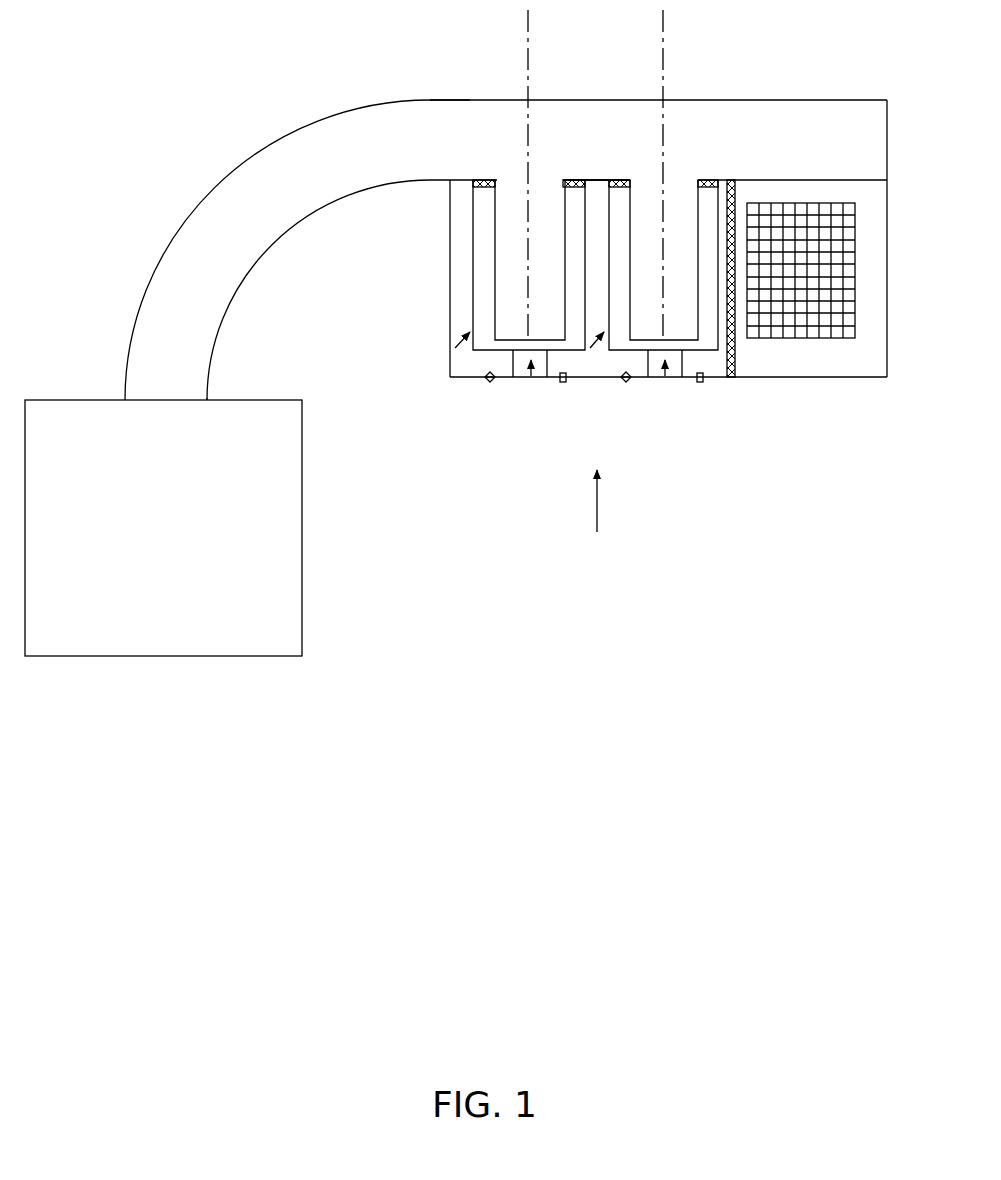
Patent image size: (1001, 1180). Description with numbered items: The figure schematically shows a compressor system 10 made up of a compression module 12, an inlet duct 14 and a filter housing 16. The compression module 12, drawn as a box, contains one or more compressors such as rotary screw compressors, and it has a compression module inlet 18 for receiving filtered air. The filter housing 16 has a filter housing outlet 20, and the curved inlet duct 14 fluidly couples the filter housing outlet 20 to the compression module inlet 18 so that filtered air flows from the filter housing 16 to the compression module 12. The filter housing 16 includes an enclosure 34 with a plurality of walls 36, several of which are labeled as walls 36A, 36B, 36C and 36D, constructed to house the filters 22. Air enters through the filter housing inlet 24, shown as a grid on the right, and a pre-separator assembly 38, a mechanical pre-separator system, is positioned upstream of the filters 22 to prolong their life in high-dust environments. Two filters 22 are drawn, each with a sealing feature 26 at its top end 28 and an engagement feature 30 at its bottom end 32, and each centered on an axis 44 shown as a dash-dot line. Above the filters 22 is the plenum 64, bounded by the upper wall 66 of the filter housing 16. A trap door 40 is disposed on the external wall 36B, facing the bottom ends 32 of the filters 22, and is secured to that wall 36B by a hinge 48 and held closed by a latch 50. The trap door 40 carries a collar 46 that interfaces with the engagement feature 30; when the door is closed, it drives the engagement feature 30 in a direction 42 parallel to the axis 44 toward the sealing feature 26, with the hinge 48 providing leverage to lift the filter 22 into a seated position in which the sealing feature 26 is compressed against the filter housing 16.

The compressor system 10 is at (165, 42).
The compression module 12 is at (302, 515).
The inlet duct 14 is at (213, 188).
The filter housing 16 is at (655, 240).
The compression module inlet 18 is at (175, 405).
The filter housing outlet 20 is at (425, 99).
The filter 22 is at (473, 298).
The filter housing inlet 24 is at (856, 290).
The sealing feature 26 is at (484, 180).
The top end 28 is at (551, 192).
The engagement feature 30 is at (530, 378).
The bottom end 32 is at (456, 346).
The enclosure 34 is at (655, 234).
The walls 36 is at (655, 240).
The wall 36A is at (450, 232).
The wall 36B is at (825, 378).
The wall 36C is at (887, 265).
The wall 36D is at (680, 98).
The pre-separator assembly 38 is at (736, 352).
The trap door 40 is at (532, 382).
The direction 42 is at (598, 508).
The axis 44 is at (530, 15).
The collar 46 is at (487, 378).
The hinge 48 is at (490, 384).
The latch 50 is at (563, 384).
The plenum 64 is at (618, 125).
The upper wall 66 is at (597, 180).